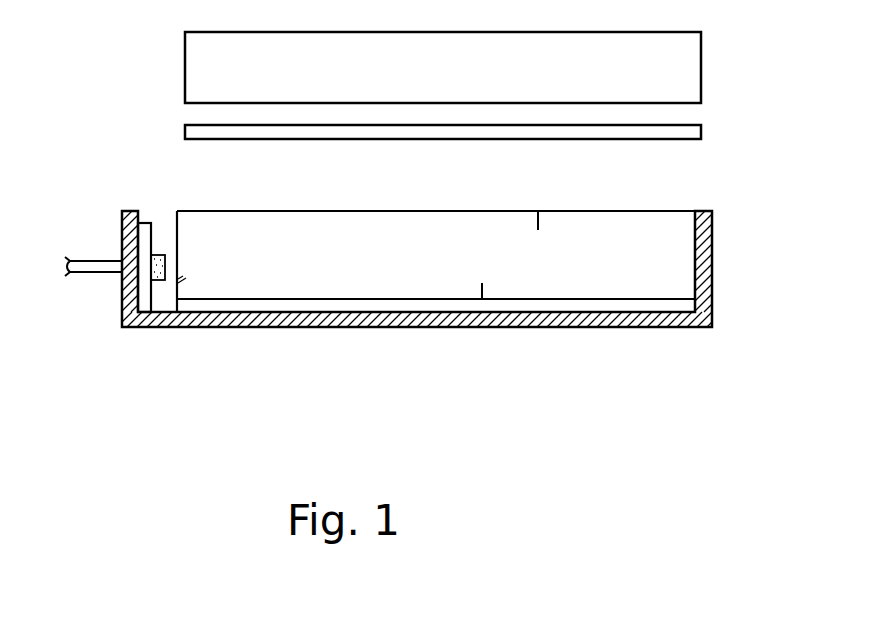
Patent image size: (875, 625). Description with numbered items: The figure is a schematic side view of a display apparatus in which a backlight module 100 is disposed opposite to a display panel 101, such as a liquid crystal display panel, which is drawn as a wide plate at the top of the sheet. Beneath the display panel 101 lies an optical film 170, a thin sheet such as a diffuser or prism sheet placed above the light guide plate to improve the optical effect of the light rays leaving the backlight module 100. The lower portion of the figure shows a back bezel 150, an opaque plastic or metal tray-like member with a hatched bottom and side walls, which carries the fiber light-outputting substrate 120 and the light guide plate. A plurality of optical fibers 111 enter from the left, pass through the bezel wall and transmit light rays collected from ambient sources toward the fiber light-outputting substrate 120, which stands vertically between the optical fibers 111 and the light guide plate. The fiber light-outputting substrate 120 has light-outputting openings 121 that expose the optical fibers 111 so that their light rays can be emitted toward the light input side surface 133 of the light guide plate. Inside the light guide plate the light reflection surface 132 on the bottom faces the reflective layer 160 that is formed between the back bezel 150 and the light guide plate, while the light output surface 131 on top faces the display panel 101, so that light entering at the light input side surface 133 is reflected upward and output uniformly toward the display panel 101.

The backlight module 100 is at (722, 262).
The display panel 101 is at (690, 63).
The optical fibers 111 is at (93, 274).
The fiber light-outputting substrate 120 is at (140, 212).
The light-outputting openings 121 is at (162, 254).
The light output surface 131 is at (541, 220).
The light reflection surface 132 is at (473, 292).
The light input side surface 133 is at (188, 278).
The back bezel 150 is at (688, 318).
The reflective layer 160 is at (637, 303).
The optical film 170 is at (690, 137).